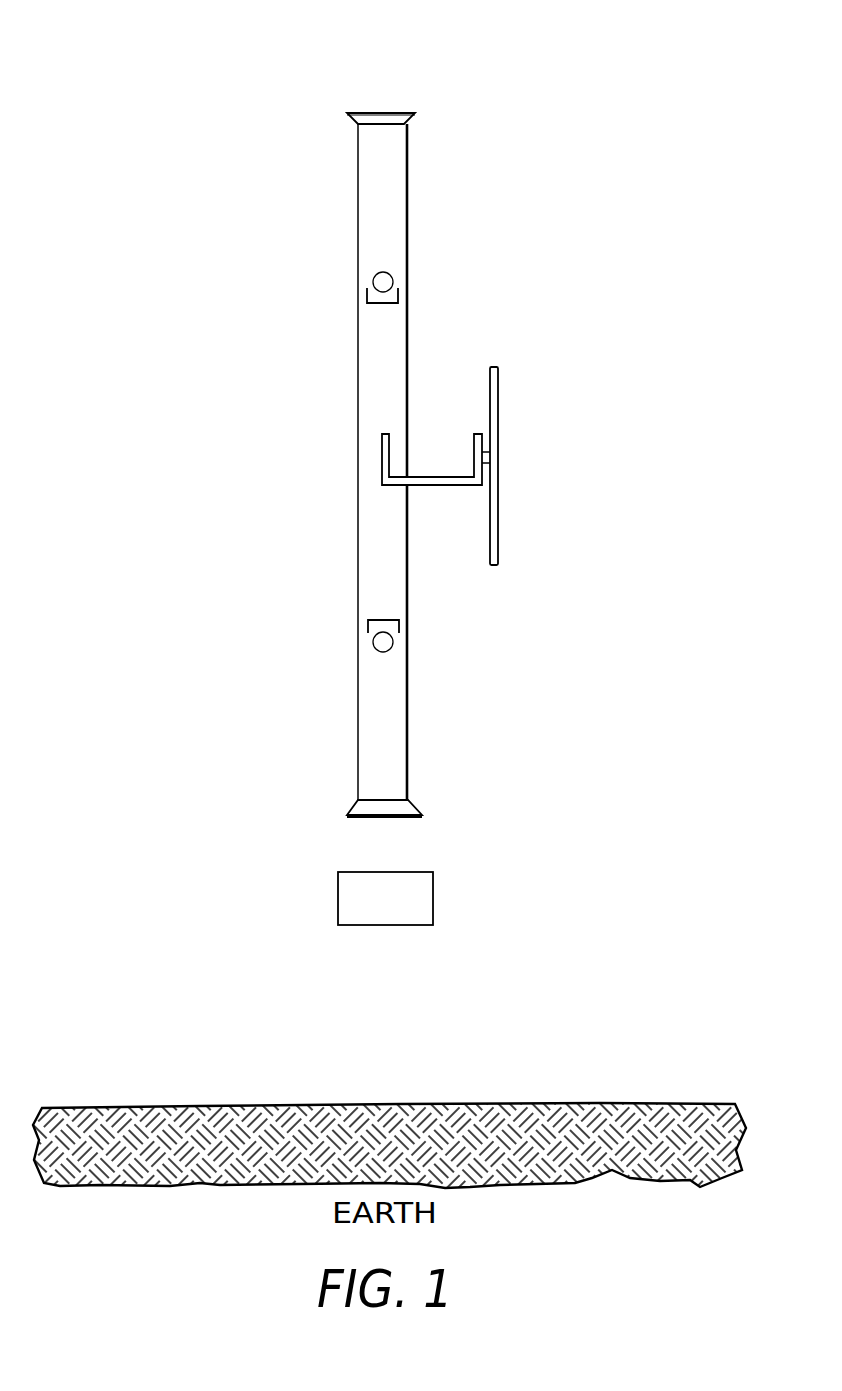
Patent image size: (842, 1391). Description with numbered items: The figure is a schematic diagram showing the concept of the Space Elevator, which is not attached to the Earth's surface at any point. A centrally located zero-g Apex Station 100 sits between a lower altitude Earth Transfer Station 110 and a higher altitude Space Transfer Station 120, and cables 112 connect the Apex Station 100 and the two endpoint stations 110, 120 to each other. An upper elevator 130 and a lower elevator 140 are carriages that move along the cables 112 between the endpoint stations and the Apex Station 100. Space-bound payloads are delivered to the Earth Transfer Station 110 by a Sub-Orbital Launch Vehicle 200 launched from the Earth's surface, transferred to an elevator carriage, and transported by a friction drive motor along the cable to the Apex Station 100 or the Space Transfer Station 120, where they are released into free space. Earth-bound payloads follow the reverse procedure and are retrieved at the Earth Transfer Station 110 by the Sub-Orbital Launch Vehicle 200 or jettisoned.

The Apex Station 100 is at (445, 385).
The Earth Transfer Station 110 is at (371, 825).
The cables 112 is at (405, 380).
The Space Transfer Station 120 is at (390, 101).
The upper elevator 130 is at (338, 270).
The lower elevator 140 is at (341, 648).
The Sub-Orbital Launch Vehicle 200 is at (402, 825).